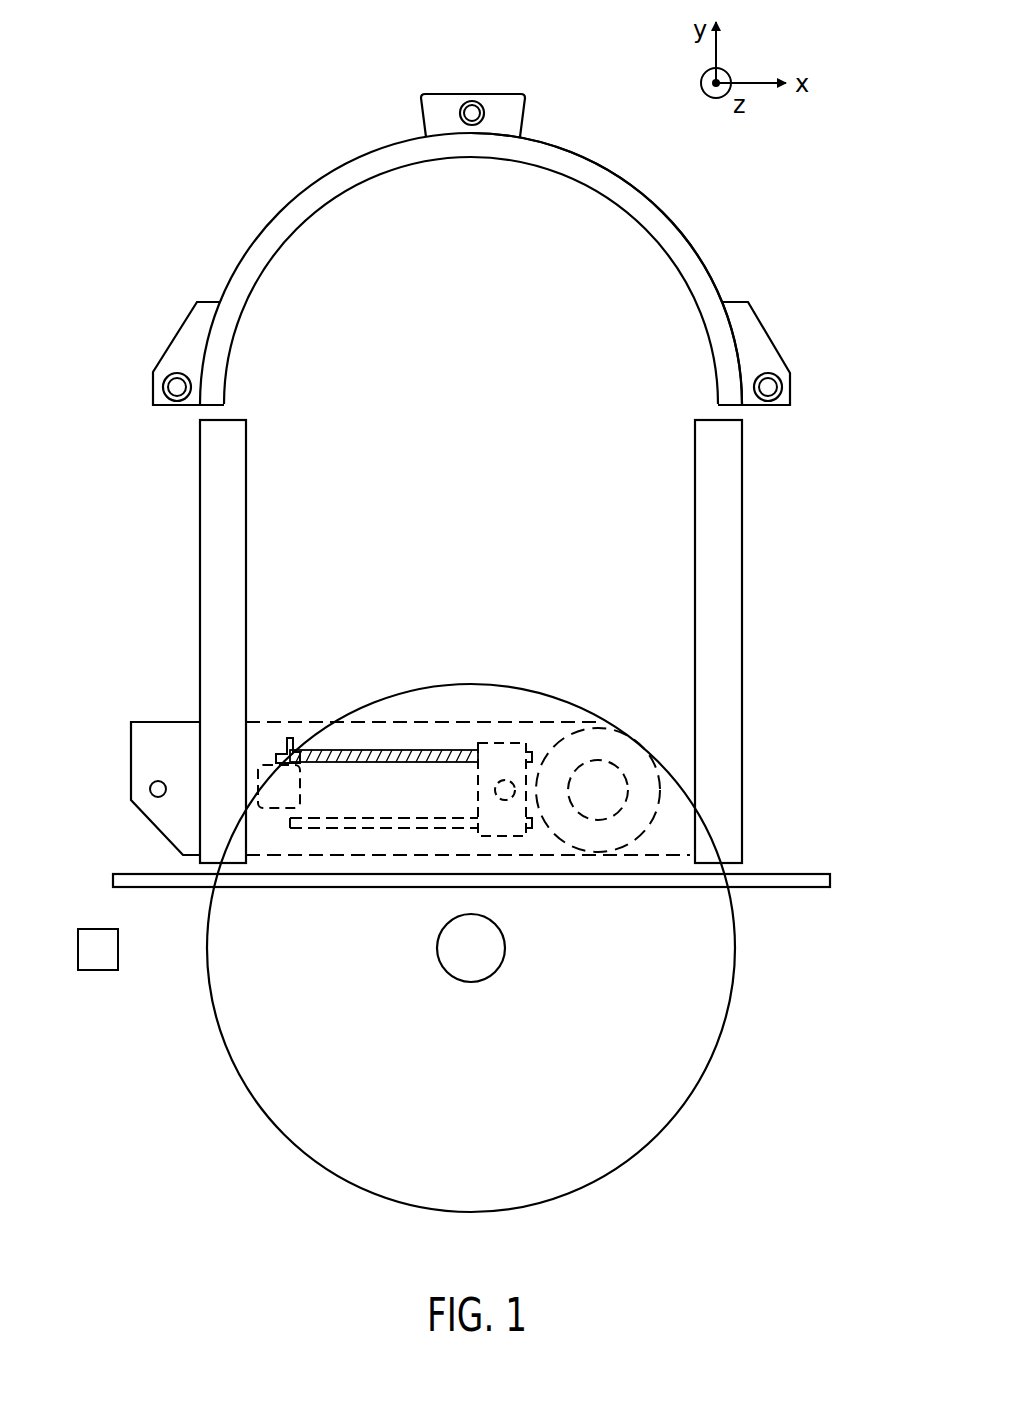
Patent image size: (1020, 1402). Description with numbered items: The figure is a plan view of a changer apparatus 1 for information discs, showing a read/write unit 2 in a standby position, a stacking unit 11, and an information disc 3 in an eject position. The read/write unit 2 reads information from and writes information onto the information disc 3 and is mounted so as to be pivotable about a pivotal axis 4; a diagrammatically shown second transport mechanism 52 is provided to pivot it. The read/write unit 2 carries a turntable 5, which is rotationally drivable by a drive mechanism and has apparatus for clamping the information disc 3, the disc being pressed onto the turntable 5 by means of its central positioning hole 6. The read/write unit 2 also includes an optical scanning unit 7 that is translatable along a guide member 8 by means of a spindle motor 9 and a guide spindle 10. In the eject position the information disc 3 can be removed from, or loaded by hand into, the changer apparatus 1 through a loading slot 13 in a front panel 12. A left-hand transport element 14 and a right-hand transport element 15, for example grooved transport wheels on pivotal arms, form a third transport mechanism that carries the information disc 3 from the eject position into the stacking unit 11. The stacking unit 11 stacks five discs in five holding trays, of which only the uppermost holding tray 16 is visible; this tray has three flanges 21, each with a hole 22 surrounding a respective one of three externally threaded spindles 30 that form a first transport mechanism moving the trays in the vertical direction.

The changer apparatus 1 is at (786, 192).
The read/write unit 2 is at (163, 722).
The information disc 3 is at (693, 1048).
The pivotal axis 4 is at (148, 789).
The turntable 5 is at (625, 730).
The central positioning hole 6 is at (462, 970).
The optical scanning unit 7 is at (500, 760).
The guide member 8 is at (355, 822).
The spindle motor 9 is at (282, 795).
The guide spindle 10 is at (366, 748).
The stacking unit 11 is at (455, 160).
The front panel 12 is at (614, 888).
The loading slot 13 is at (500, 888).
The left-hand transport element 14 is at (232, 612).
The right-hand transport element 15 is at (729, 645).
The uppermost holding tray 16 is at (661, 232).
The flange 21 is at (441, 97).
The hole 22 is at (472, 100).
The spindle 30 is at (478, 115).
The second transport mechanism 52 is at (120, 888).